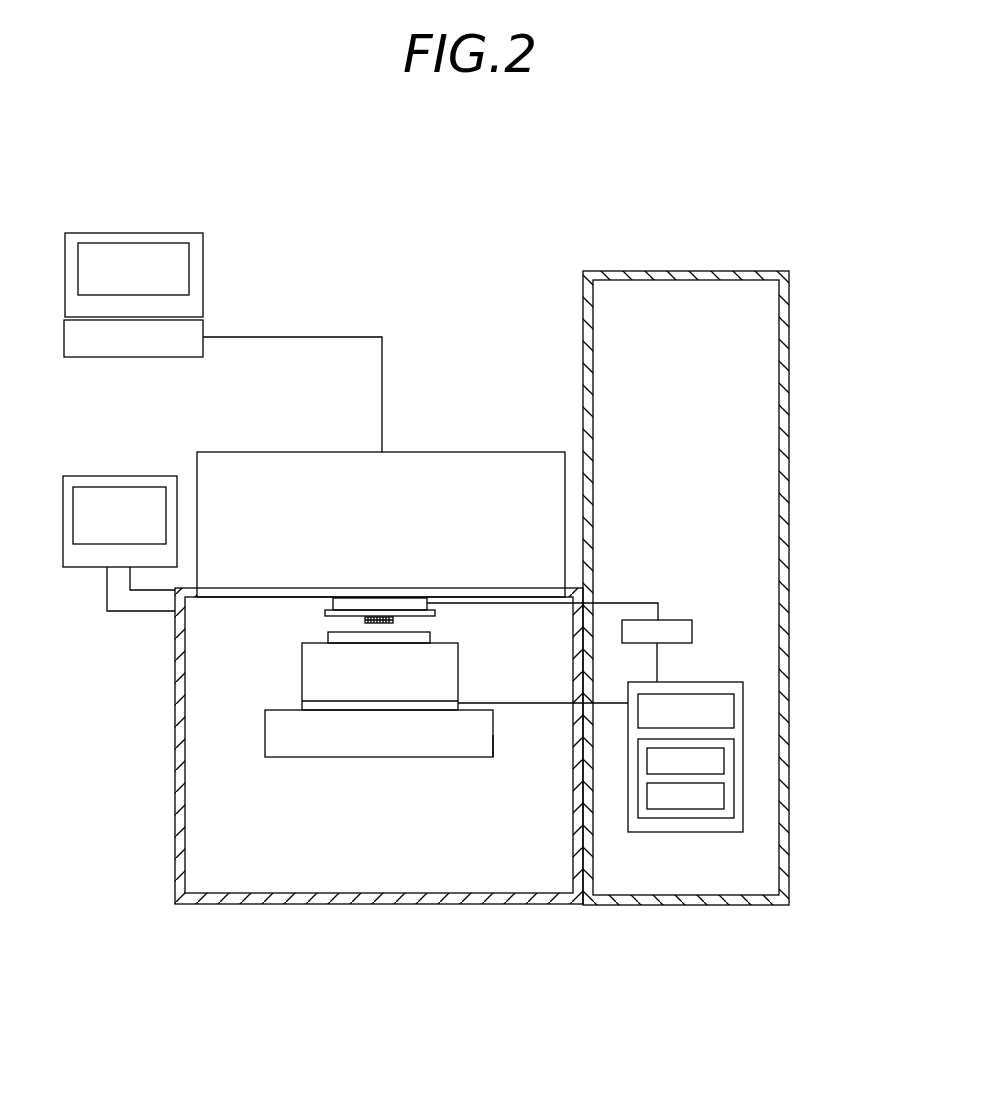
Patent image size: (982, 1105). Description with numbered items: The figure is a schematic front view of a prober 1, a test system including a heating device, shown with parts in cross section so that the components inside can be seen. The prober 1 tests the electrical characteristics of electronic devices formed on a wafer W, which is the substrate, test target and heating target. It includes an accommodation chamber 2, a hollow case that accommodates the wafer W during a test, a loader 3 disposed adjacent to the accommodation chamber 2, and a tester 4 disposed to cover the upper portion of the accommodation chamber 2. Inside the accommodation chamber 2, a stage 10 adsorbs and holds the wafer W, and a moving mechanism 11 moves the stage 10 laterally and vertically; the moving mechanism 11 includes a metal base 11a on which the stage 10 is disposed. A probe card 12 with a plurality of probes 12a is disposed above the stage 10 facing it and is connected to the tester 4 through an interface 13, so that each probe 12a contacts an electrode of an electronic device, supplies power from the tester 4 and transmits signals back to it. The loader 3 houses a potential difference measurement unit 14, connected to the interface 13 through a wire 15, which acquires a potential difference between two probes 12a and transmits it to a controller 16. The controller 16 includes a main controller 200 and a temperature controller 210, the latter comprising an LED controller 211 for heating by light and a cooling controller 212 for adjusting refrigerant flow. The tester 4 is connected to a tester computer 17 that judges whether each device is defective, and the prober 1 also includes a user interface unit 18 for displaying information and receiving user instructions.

The prober 1 is at (448, 166).
The accommodation chamber 2 is at (175, 740).
The loader 3 is at (695, 271).
The tester 4 is at (468, 452).
The stage 10 is at (458, 665).
The moving mechanism 11 is at (386, 768).
The base 11a is at (477, 758).
The probe card 12 is at (325, 617).
The probe 12a is at (365, 622).
The interface 13 is at (334, 603).
The potential difference measurement unit 14 is at (688, 620).
The wire 15 is at (633, 603).
The controller 16 is at (688, 832).
The tester computer 17 is at (203, 263).
The user interface unit 18 is at (121, 476).
The main controller 200 is at (725, 712).
The temperature controller 210 is at (732, 820).
The LED controller 211 is at (724, 760).
The cooling controller 212 is at (724, 795).
The wafer W is at (430, 633).